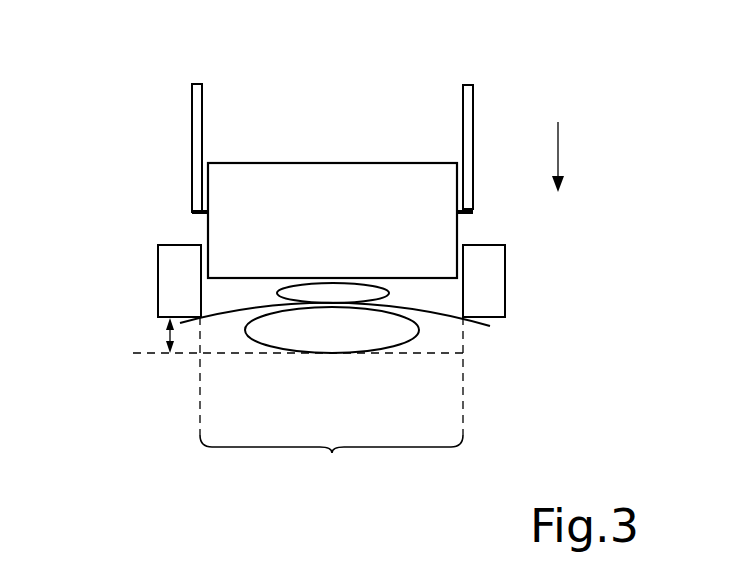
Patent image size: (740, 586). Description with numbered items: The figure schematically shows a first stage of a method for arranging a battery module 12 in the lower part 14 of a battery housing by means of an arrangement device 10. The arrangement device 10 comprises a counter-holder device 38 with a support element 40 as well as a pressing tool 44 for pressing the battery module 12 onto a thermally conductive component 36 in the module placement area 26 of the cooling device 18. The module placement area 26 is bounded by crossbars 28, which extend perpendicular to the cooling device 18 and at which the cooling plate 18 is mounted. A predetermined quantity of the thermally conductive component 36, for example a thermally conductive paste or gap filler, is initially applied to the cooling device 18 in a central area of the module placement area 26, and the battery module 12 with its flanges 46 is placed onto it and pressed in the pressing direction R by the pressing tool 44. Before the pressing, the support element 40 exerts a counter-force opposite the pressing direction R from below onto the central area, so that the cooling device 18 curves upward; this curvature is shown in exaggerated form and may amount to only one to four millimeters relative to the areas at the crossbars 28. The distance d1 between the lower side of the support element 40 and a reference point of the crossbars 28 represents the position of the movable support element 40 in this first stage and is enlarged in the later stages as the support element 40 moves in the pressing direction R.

The arrangement device 10 is at (452, 411).
The battery module 12 is at (367, 152).
The lower part of the battery housing 14 is at (135, 266).
The cooling device 18 is at (477, 322).
The module placement area 26 is at (331, 401).
The crossbars 28 is at (158, 282).
The thermally conductive component 36 is at (323, 283).
The counter-holder device 38 is at (400, 364).
The support element 40 is at (362, 354).
The pressing tool 44 is at (197, 83).
The flanges 46 is at (192, 212).
The distance d1 is at (168, 342).
The pressing direction R is at (558, 152).